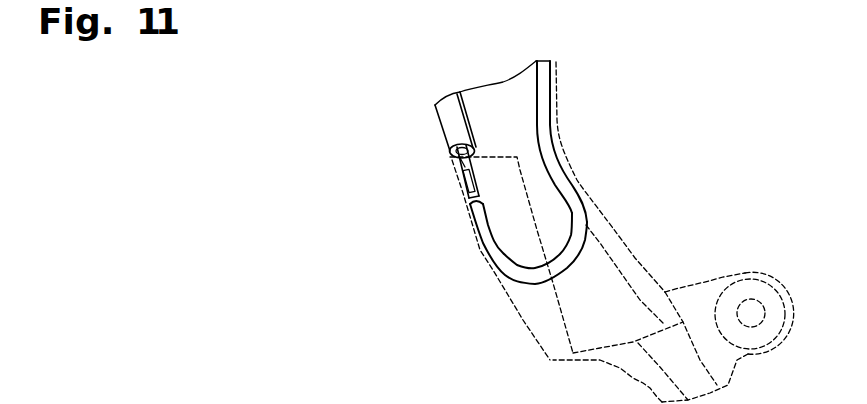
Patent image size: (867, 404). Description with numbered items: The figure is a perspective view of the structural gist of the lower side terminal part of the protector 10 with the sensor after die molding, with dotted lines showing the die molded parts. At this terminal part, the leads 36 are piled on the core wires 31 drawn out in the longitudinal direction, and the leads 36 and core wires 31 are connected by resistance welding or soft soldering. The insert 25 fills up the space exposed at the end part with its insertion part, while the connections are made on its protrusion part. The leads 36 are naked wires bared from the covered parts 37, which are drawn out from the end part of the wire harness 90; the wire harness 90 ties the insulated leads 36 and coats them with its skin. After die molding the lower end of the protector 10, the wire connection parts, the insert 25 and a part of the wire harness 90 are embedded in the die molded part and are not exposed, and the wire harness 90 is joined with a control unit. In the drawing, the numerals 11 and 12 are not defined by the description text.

The protector with the sensor 10 is at (420, 113).
The main body 11 is at (510, 94).
The tubular portion 12 is at (443, 123).
The insert 25 is at (455, 170).
The core wire 31 is at (447, 162).
The lead 36 is at (467, 177).
The covered part 37 is at (462, 190).
The wire harness 90 is at (545, 142).